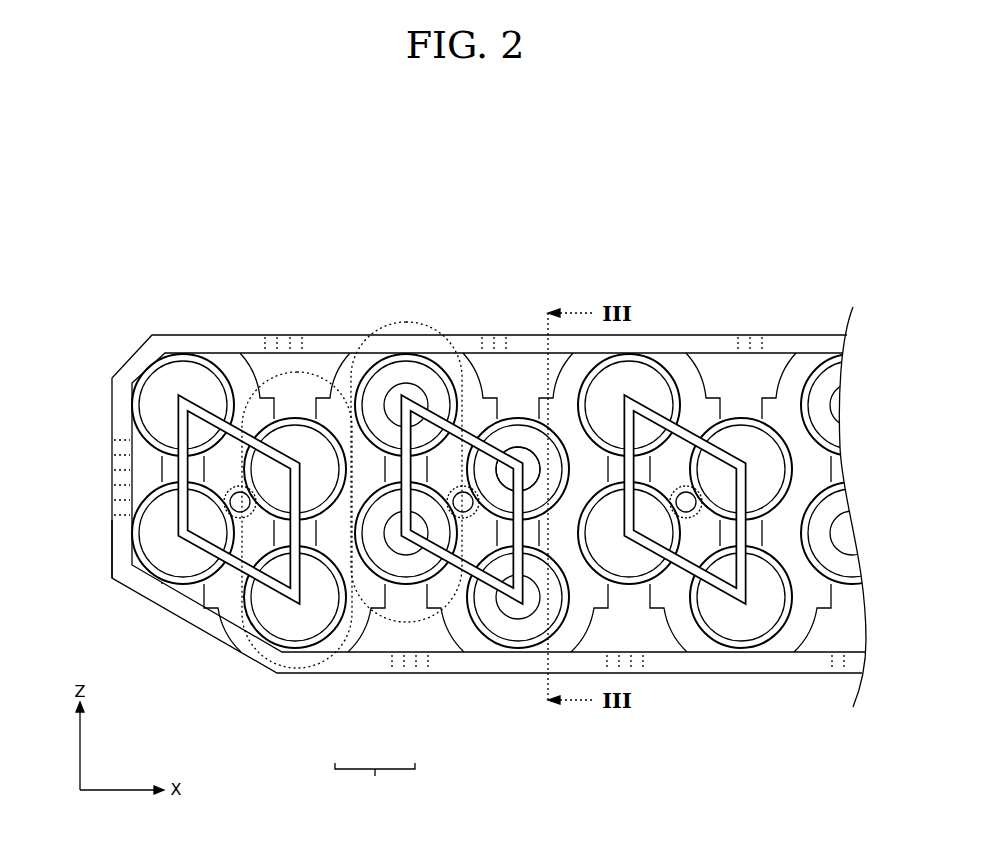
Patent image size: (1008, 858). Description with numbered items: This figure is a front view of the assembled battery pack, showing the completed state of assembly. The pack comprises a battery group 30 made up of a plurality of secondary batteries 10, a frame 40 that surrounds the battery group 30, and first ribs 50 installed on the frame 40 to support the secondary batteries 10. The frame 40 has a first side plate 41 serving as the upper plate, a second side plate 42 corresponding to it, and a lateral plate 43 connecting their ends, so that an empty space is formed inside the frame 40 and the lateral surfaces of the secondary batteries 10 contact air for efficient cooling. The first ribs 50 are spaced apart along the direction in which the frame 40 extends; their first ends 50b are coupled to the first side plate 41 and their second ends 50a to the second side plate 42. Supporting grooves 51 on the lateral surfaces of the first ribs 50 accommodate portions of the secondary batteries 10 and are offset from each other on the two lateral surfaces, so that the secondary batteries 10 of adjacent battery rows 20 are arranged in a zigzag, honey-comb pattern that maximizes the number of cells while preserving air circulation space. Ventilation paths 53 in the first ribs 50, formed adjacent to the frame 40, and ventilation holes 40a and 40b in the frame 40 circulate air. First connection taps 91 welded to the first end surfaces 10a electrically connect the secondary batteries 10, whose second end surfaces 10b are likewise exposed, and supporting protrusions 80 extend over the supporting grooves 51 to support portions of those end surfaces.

The secondary battery 10 is at (300, 657).
The first end surface 10a is at (175, 565).
The second end surface 10b is at (525, 440).
The battery row 20 is at (318, 665).
The battery group 30 is at (375, 780).
The frame 40 is at (243, 327).
The ventilation hole 40a is at (273, 347).
The ventilation hole 40b is at (118, 457).
The first side plate 41 is at (195, 350).
The second side plate 42 is at (745, 668).
The lateral plate 43 is at (118, 537).
The first rib 50 is at (338, 352).
The second end 50a is at (550, 655).
The first end 50b is at (583, 363).
The supporting groove 51 is at (633, 560).
The ventilation path 53 is at (773, 363).
The supporting protrusion 80 is at (684, 365).
The first connection tap 91 is at (766, 651).